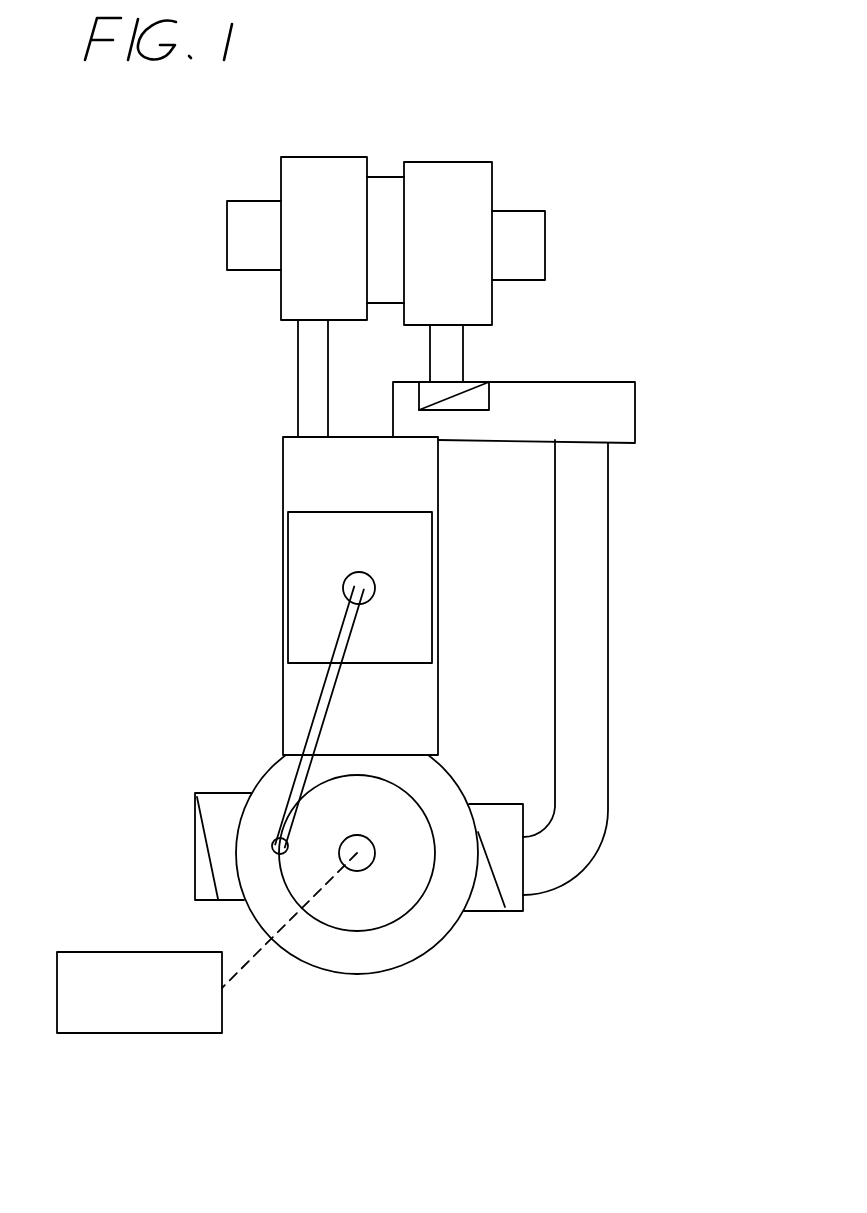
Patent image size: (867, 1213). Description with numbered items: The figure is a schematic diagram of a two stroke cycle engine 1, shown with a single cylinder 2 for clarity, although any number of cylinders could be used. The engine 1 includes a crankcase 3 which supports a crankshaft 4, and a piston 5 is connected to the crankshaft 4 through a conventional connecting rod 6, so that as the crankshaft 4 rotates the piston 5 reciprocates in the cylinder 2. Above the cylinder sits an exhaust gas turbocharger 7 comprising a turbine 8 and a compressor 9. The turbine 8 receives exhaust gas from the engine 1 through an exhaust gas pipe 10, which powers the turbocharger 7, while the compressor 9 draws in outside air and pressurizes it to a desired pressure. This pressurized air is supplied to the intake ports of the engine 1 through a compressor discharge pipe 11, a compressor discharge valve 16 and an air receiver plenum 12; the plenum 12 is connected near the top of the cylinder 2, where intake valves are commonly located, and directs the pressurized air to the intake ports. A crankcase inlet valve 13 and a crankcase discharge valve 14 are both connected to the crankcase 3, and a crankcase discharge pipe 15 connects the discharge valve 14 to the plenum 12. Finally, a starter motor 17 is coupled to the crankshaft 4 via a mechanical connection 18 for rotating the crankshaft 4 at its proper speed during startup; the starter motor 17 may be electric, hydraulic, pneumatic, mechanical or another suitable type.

The two stroke cycle engine 1 is at (170, 736).
The cylinder 2 is at (323, 470).
The crankcase 3 is at (368, 973).
The crankshaft 4 is at (421, 898).
The piston 5 is at (325, 540).
The connecting rod 6 is at (342, 623).
The exhaust gas turbocharger 7 is at (388, 165).
The turbine 8 is at (338, 257).
The compressor 9 is at (460, 265).
The exhaust gas pipe 10 is at (298, 372).
The compressor discharge pipe 11 is at (463, 355).
The air receiver plenum 12 is at (636, 444).
The crankcase inlet valve 13 is at (195, 855).
The crankcase discharge valve 14 is at (525, 911).
The crankcase discharge pipe 15 is at (608, 724).
The compressor discharge valve 16 is at (490, 399).
The starter motor 17 is at (160, 1015).
The mechanical connection 18 is at (250, 960).